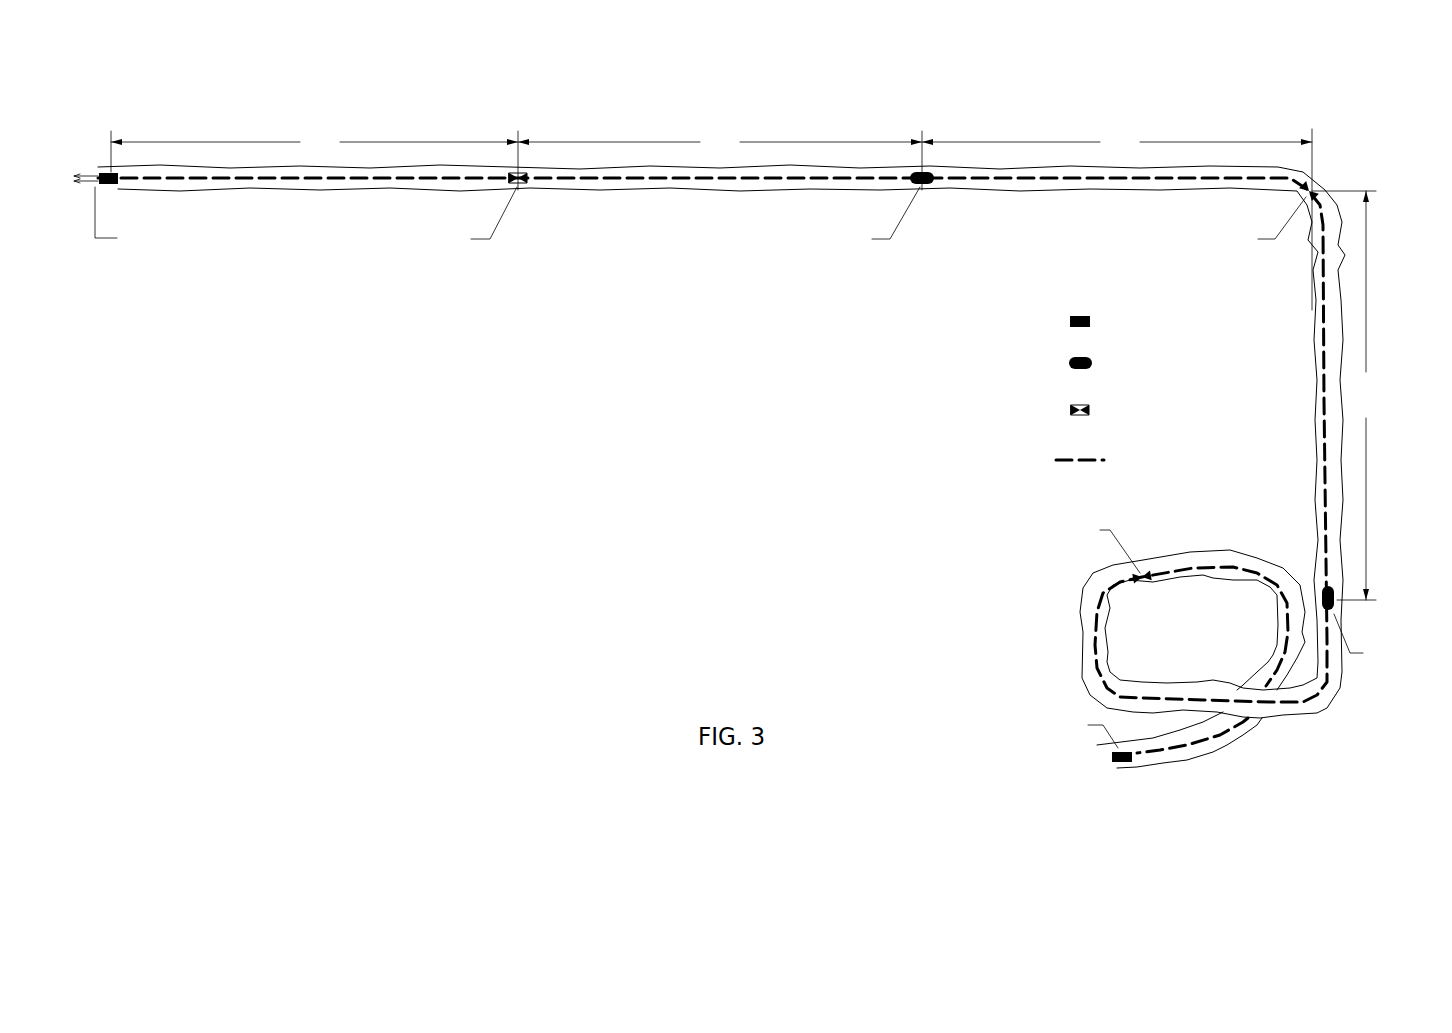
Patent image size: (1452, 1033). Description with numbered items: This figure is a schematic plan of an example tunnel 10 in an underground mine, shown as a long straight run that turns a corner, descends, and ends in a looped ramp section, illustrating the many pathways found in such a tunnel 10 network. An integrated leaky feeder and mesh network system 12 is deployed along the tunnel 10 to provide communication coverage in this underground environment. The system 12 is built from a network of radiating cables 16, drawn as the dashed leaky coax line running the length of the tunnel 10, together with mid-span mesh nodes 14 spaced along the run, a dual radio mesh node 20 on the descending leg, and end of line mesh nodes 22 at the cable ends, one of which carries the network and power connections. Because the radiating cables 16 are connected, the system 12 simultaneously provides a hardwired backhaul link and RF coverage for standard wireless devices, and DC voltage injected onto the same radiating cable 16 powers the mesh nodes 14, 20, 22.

The tunnel 10 is at (330, 190).
The integrated leaky feeder and mesh network system 12 is at (878, 422).
The mid-span mesh node 14 is at (518, 185).
The radiating cable 16 is at (680, 185).
The dual radio mesh node 20 is at (1336, 596).
The end of line mesh node 22 is at (115, 188).